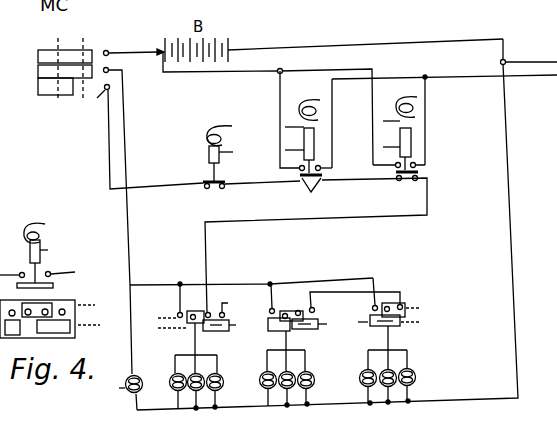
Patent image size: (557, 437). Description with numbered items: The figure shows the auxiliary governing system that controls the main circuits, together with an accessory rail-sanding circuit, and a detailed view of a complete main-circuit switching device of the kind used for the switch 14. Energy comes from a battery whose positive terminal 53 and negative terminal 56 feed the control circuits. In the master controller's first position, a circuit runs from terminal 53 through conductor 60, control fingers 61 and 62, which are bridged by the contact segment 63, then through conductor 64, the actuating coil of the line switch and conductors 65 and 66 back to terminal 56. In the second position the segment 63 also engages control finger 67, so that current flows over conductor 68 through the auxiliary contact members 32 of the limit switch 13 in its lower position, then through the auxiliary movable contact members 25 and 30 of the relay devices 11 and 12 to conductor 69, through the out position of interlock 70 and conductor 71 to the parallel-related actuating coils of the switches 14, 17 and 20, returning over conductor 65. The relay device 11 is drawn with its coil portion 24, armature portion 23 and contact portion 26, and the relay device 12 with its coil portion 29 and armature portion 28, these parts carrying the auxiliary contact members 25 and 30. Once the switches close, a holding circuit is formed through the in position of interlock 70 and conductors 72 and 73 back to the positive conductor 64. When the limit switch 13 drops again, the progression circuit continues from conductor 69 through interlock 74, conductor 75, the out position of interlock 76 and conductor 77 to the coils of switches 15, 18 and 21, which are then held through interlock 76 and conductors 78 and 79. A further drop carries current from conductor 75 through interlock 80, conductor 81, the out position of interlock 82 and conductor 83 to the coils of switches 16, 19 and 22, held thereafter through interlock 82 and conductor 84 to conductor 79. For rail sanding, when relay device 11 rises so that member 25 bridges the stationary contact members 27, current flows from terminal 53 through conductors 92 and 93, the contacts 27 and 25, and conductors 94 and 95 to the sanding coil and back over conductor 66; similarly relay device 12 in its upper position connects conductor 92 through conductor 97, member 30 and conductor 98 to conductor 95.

In FIG. 2, the contact segment 63 is at (40, 60).
In FIG. 2, the control finger 61 is at (131, 42).
In FIG. 2, the conductor 60 is at (137, 47).
In FIG. 2, the control finger 62 is at (109, 70).
In FIG. 2, the control finger 67 is at (91, 106).
In FIG. 2, the conductor 68 is at (108, 140).
In FIG. 2, the conductor 64 is at (126, 127).
In FIG. 2, the positive terminal 53 is at (192, 39).
In FIG. 2, the negative terminal 56 is at (231, 47).
In FIG. 2, the conductor 92 is at (268, 108).
In FIG. 2, the conductor 97 is at (367, 58).
In FIG. 2, the conductor 66 is at (524, 232).
In FIG. 2, the conductor 95 is at (495, 80).
In FIG. 2, the conductor 93 is at (279, 115).
In FIG. 2, the conductor 94 is at (333, 110).
In FIG. 2, the conductor 98 is at (426, 106).
In FIG. 2, the relay coil 24 is at (308, 100).
In FIG. 2, the relay armature 23 is at (299, 150).
In FIG. 2, the relay device 11 is at (326, 160).
In FIG. 2, the stationary contact members 27 is at (299, 168).
In FIG. 2, the relay contact 26 is at (312, 193).
In FIG. 2, the auxiliary movable contact member 25 is at (333, 171).
In FIG. 2, the relay coil 29 is at (397, 109).
In FIG. 2, the relay armature 28 is at (394, 145).
In FIG. 2, the relay device 12 is at (410, 141).
In FIG. 2, the auxiliary movable contact member 30 is at (399, 185).
In FIG. 2, the limit switch 13 is at (219, 160).
In FIG. 2, the auxiliary contact members 32 is at (217, 198).
In FIG. 2, the conductor 69 is at (373, 215).
In FIG. 2, the conductor 73 is at (160, 284).
In FIG. 2, the conductor 79 is at (262, 266).
In FIG. 2, the conductor 78 is at (275, 283).
In FIG. 2, the conductor 72 is at (180, 300).
In FIG. 2, the interlock 70 is at (174, 313).
In FIG. 2, the interlock 74 is at (213, 331).
In FIG. 2, the conductor 75 is at (234, 308).
In FIG. 2, the switch 17 is at (192, 414).
In FIG. 2, the conductor 71 is at (195, 342).
In FIG. 2, the switch 14 is at (173, 377).
In FIG. 4, the switch 14 is at (56, 289).
In FIG. 2, the switch 20 is at (217, 378).
In FIG. 2, the conductor 65 is at (148, 410).
In FIG. 2, the interlock 76 is at (294, 309).
In FIG. 2, the interlock 80 is at (313, 328).
In FIG. 2, the conductor 81 is at (318, 310).
In FIG. 2, the conductor 77 is at (284, 340).
In FIG. 2, the switch 15 is at (266, 377).
In FIG. 2, the switch 21 is at (308, 378).
In FIG. 2, the switch 18 is at (285, 406).
In FIG. 2, the conductor 84 is at (375, 281).
In FIG. 2, the interlock 82 is at (404, 306).
In FIG. 2, the conductor 83 is at (392, 333).
In FIG. 2, the switch 16 is at (363, 373).
In FIG. 2, the switch 22 is at (413, 374).
In FIG. 2, the switch 19 is at (388, 400).